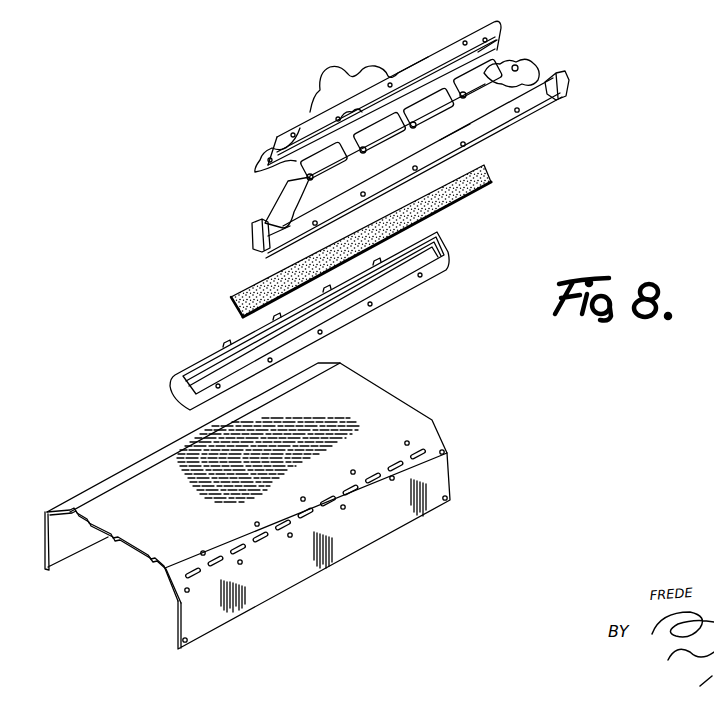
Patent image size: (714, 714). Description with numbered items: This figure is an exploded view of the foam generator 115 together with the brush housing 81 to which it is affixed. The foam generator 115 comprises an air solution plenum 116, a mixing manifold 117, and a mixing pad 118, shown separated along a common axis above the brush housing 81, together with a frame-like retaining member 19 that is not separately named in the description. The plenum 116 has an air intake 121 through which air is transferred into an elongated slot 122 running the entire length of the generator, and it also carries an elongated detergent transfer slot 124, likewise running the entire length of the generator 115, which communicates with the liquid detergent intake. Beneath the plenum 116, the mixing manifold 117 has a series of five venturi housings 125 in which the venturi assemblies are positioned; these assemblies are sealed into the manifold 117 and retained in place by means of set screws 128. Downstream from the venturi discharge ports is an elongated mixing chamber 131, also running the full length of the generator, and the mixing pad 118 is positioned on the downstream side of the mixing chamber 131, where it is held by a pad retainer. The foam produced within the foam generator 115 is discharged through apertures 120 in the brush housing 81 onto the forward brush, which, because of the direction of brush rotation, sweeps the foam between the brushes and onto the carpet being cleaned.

The foam generator 115 is at (158, 197).
The air solution plenum 116 is at (338, 108).
The mixing manifold 117 is at (532, 116).
The mixing pad 118 is at (492, 182).
The lens frame 19 is at (453, 256).
The brush housing 81 is at (397, 403).
The apertures 120 is at (402, 468).
The air intake 121 is at (333, 67).
The elongated slot 122 is at (482, 48).
The elongated detergent transfer slot 124 is at (500, 60).
The venturi housings 125 is at (467, 98).
The set screws 128 is at (413, 128).
The mixing chamber 131 is at (468, 125).